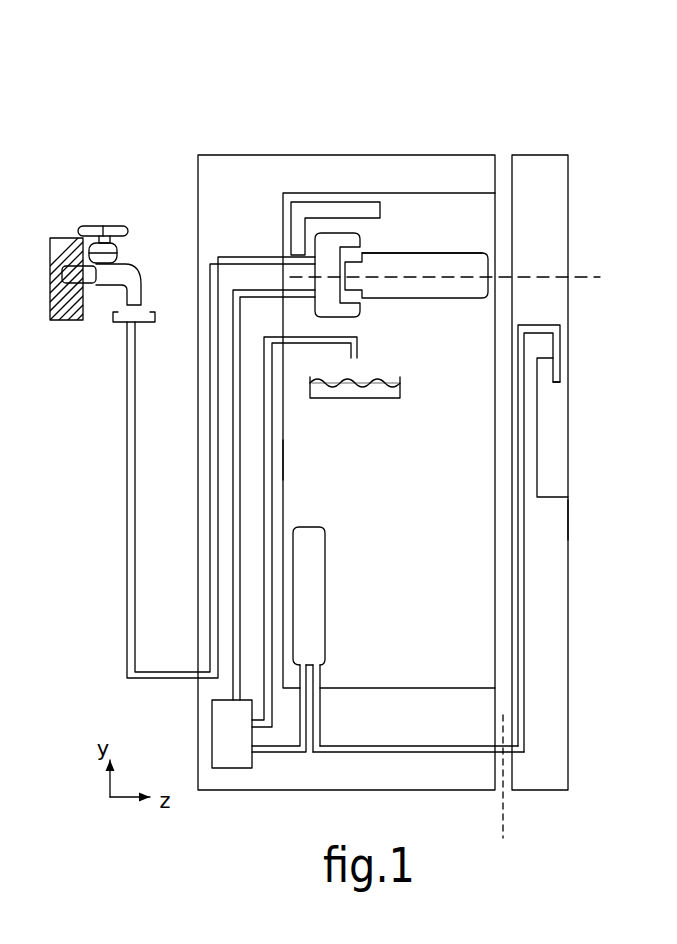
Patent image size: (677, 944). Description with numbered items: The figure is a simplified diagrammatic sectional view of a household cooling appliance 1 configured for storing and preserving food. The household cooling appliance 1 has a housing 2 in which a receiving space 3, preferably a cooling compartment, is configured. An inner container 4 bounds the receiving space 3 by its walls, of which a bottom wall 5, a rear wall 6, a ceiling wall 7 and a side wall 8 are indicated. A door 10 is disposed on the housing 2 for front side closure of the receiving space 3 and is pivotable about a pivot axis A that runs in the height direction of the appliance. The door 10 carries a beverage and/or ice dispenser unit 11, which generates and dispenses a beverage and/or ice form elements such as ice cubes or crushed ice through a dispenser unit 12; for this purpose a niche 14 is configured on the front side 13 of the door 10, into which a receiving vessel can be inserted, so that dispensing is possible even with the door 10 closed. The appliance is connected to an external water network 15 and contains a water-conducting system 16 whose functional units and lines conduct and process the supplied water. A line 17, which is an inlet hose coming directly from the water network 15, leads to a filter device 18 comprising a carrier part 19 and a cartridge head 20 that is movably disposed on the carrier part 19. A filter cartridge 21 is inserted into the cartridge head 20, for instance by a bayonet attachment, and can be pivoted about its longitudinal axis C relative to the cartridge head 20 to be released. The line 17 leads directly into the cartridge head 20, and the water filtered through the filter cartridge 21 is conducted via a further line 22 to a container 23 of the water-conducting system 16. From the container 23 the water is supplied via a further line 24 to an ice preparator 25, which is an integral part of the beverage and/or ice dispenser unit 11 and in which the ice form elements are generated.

The household cooling appliance 1 is at (511, 105).
The housing 2 is at (355, 141).
The receiving space 3 is at (480, 543).
The inner container 4 is at (413, 189).
The bottom wall 5 is at (383, 687).
The rear wall 6 is at (287, 456).
The ceiling wall 7 is at (480, 196).
The side wall 8 is at (447, 397).
The door 10 is at (555, 690).
The beverage and/or ice dispenser unit 11 is at (573, 363).
The dispenser unit 12 is at (566, 360).
The front side 13 is at (568, 518).
The niche 14 is at (557, 425).
The external water network 15 is at (124, 236).
The water-conducting system 16 is at (140, 540).
The line 17 is at (135, 415).
The filter device 18 is at (381, 239).
The carrier part 19 is at (335, 193).
The cartridge head 20 is at (363, 304).
The filter cartridge 21 is at (441, 253).
The line 22 is at (293, 298).
The container 23 is at (228, 760).
The line 24 is at (279, 416).
The ice preparator 25 is at (382, 382).
The pivot axis A is at (503, 820).
The longitudinal axis C is at (598, 273).